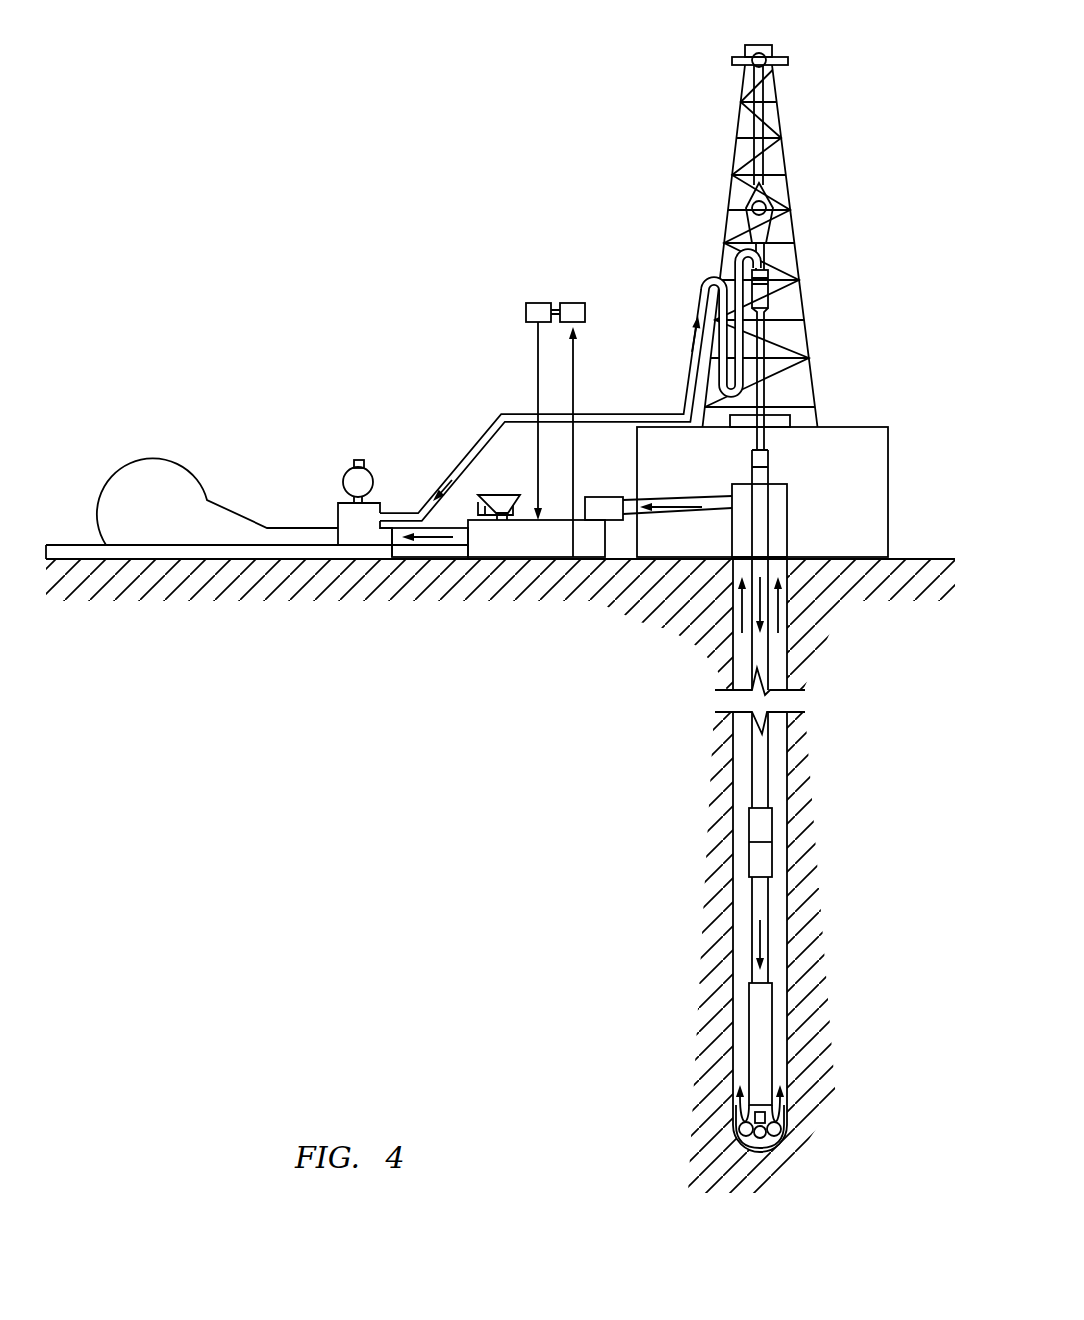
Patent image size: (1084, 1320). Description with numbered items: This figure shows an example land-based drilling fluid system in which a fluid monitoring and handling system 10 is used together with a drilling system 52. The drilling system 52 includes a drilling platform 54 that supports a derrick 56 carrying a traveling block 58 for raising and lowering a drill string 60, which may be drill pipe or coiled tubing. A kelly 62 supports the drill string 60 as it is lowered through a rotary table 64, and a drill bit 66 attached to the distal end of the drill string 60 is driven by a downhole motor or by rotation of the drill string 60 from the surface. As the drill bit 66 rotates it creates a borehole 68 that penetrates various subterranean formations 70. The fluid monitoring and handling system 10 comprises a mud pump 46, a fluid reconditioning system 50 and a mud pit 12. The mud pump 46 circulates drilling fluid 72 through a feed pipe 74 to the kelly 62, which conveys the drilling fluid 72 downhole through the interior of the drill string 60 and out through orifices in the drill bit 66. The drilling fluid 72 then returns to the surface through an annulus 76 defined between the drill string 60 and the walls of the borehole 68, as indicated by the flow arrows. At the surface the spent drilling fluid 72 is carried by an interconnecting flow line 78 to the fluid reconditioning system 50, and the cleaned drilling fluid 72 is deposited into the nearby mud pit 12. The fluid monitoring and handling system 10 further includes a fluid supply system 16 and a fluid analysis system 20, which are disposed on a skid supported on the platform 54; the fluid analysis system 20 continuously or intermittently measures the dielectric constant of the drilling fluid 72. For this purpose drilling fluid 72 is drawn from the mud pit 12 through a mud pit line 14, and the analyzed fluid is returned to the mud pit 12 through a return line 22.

The fluid monitoring and handling system 10 is at (373, 405).
The mud pit 12 is at (578, 560).
The mud pit line 14 is at (582, 371).
The fluid supply system 16 is at (578, 303).
The fluid analysis system 20 is at (526, 307).
The return line 22 is at (536, 440).
The mud pump 46 is at (137, 507).
The fluid reconditioning system 50 is at (600, 497).
The drilling system 52 is at (403, 100).
The drilling platform 54 is at (888, 430).
The derrick 56 is at (783, 148).
The traveling block 58 is at (773, 205).
The drill string 60 is at (766, 667).
The kelly 62 is at (764, 325).
The rotary table 64 is at (788, 422).
The drill bit 66 is at (776, 1120).
The borehole 68 is at (788, 765).
The subterranean formations 70 is at (550, 790).
The drilling fluid 72 is at (403, 515).
The feed pipe 74 is at (505, 412).
The annulus 76 is at (777, 932).
The flow line 78 is at (700, 513).